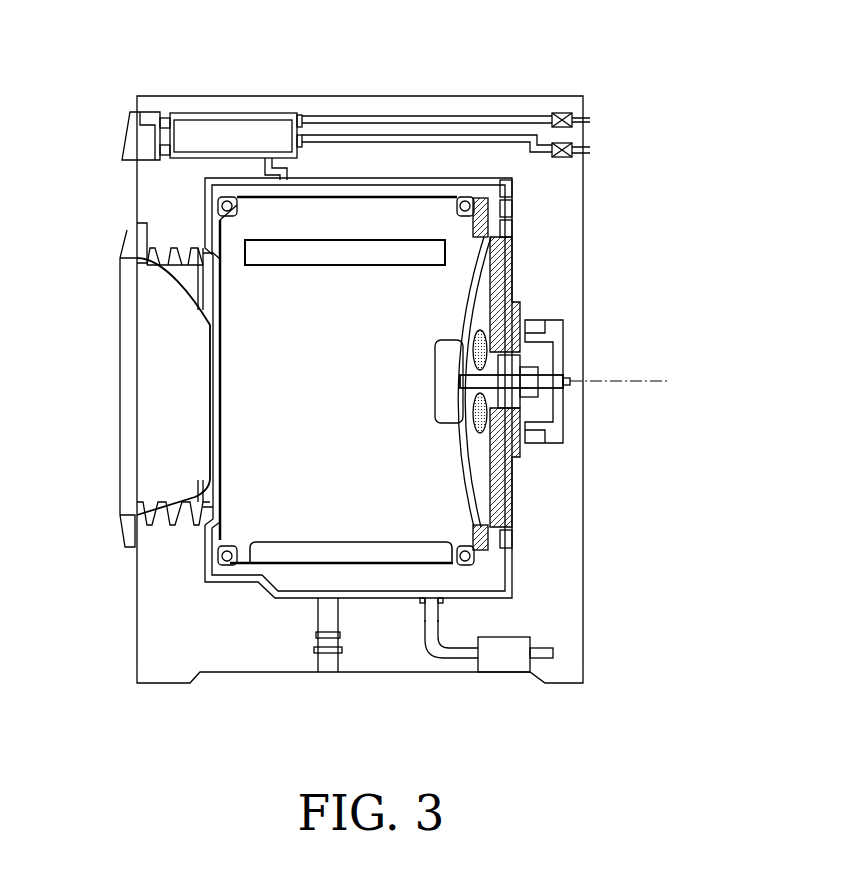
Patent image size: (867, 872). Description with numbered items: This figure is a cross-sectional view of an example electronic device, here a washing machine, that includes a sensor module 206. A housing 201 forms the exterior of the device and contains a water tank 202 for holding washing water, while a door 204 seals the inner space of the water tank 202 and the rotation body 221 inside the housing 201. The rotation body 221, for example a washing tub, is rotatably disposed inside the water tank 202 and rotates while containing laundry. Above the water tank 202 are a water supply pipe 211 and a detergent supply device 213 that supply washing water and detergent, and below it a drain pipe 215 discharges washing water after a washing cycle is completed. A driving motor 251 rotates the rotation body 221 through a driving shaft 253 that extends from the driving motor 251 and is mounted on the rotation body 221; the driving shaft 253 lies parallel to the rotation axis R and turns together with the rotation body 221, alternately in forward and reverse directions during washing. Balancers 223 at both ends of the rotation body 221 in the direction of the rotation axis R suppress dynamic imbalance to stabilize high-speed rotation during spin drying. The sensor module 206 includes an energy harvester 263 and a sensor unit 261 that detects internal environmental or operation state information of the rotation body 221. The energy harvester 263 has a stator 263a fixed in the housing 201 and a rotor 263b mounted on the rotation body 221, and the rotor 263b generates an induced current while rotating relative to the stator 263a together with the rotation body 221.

The housing 201 is at (524, 96).
The water tank 202 is at (440, 178).
The door 204 is at (125, 346).
The sensor module 206 is at (615, 382).
The water supply pipe 211 is at (367, 135).
The detergent supply device 213 is at (210, 113).
The drain pipe 215 is at (432, 637).
The rotation body 221 is at (300, 568).
The balancers 223 is at (218, 182).
The driving motor 251 is at (558, 330).
The driving shaft 253 is at (550, 380).
The sensor unit 261 is at (436, 425).
The energy harvester 263 is at (597, 382).
The stator 263a is at (487, 415).
The rotor 263b is at (472, 475).
The rotation axis R is at (665, 381).